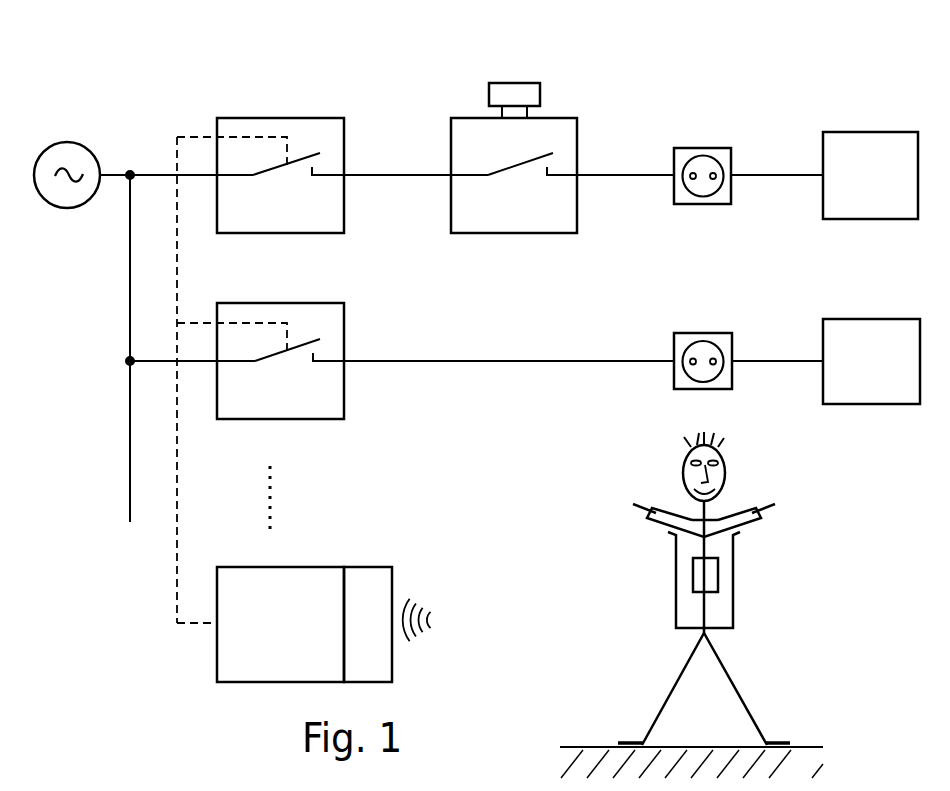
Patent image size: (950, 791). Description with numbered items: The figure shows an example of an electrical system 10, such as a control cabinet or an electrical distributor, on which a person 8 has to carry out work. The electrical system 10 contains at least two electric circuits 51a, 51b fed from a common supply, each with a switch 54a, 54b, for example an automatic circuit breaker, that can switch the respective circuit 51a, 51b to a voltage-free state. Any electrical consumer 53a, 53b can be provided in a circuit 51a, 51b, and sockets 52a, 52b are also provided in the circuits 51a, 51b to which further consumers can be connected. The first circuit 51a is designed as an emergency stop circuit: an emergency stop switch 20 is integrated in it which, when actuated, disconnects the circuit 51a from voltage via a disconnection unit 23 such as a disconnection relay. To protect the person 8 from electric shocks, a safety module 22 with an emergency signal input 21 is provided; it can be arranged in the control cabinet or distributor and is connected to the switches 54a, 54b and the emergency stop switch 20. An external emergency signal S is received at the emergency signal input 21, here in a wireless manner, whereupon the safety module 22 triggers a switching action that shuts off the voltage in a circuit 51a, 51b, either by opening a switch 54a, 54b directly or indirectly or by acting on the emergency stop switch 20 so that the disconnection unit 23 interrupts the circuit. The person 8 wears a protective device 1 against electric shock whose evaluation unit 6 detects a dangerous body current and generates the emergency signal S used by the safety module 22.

The protective device 1 is at (711, 588).
The evaluation unit 6 is at (693, 574).
The person 8 is at (727, 472).
The electrical system 10 is at (703, 95).
The emergency stop switch 20 is at (488, 92).
The emergency signal input 21 is at (370, 593).
The safety module 22 is at (303, 565).
The disconnection unit 23 is at (533, 233).
The first electric circuit 51a is at (613, 175).
The second electric circuit 51b is at (512, 362).
The socket of first circuit 52a is at (730, 148).
The socket of second circuit 52b is at (703, 333).
The first electrical consumer 53a is at (898, 190).
The second electrical consumer 53b is at (897, 374).
The first switch 54a is at (250, 117).
The second switch 54b is at (345, 327).
The emergency signal S is at (426, 638).